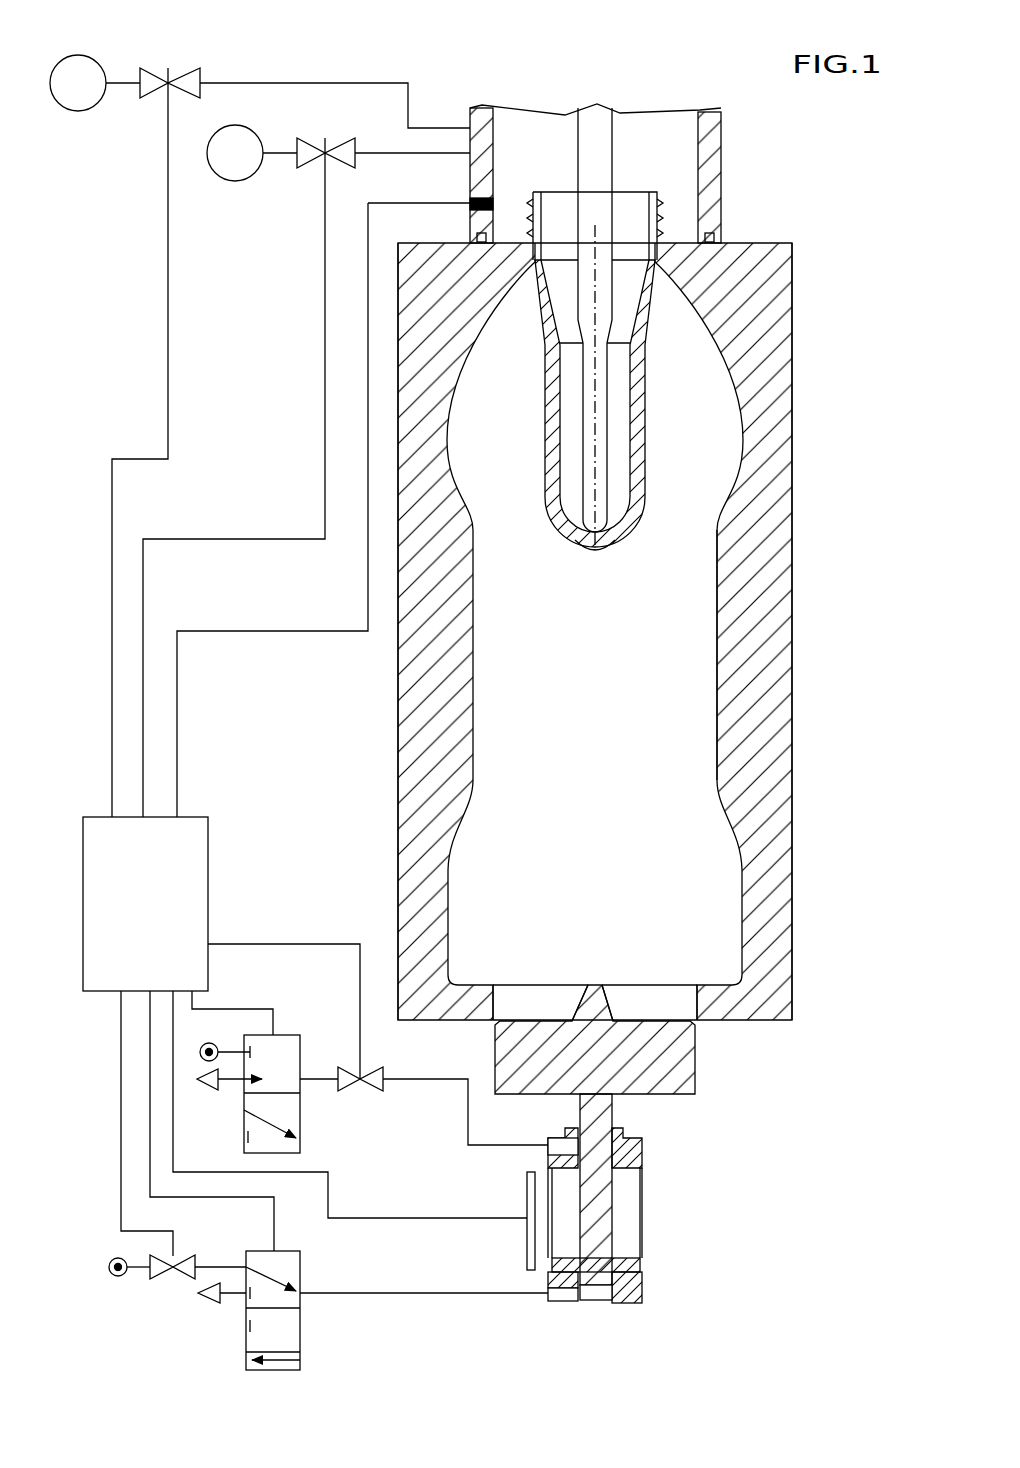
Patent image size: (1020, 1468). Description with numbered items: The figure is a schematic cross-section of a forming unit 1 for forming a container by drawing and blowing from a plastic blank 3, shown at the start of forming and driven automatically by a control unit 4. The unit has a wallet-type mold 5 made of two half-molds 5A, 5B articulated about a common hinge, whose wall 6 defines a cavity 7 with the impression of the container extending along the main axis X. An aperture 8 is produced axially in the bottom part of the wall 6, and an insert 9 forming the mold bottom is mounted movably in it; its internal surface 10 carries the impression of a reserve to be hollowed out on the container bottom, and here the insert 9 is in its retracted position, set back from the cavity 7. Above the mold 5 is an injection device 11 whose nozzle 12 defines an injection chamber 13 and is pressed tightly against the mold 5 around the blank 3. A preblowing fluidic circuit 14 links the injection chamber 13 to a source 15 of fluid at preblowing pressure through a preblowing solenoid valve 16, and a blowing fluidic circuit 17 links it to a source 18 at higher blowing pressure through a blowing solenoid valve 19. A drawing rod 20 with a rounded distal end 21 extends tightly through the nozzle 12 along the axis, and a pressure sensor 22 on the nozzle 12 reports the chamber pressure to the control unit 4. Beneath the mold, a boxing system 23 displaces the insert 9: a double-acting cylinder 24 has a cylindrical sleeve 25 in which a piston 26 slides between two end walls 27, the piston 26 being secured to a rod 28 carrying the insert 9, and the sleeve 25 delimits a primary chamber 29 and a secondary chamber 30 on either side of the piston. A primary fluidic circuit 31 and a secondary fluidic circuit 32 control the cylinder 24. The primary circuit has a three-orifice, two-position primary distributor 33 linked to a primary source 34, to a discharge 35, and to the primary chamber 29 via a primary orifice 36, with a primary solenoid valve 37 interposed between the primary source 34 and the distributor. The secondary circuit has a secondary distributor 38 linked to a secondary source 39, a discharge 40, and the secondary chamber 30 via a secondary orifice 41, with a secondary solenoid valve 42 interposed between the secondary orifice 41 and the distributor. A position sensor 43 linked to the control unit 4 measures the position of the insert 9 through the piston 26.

The forming unit 1 is at (812, 172).
The blank 3 is at (648, 423).
The control unit 4 is at (137, 912).
The mold 5 is at (792, 290).
The half-mold 5A is at (398, 768).
The half-mold 5B is at (792, 718).
The wall 6 is at (792, 555).
The cavity 7 is at (604, 644).
The aperture 8 is at (535, 1000).
The insert 9 is at (695, 1068).
The internal surface 10 is at (620, 1020).
The injection device 11 is at (260, 413).
The nozzle 12 is at (715, 128).
The injection chamber 13 is at (672, 162).
The preblowing fluidic circuit 14 is at (388, 82).
The source of fluid at preblowing pressure 15 is at (63, 96).
The preblowing solenoid valve 16 is at (157, 68).
The blowing fluidic circuit 17 is at (357, 152).
The source of fluid at blowing pressure 18 is at (220, 166).
The blowing solenoid valve 19 is at (306, 162).
The drawing rod 20 is at (580, 155).
The rounded distal end 21 is at (588, 537).
The pressure sensor 22 is at (470, 203).
The boxing system 23 is at (637, 1224).
The cylinder 24 is at (614, 1226).
The cylindrical sleeve 25 is at (645, 1243).
The piston 26 is at (640, 1267).
The end walls 27 is at (642, 1150).
The rod 28 is at (605, 1113).
The primary chamber 29 is at (597, 1302).
The secondary chamber 30 is at (628, 1200).
The primary fluidic circuit 31 is at (307, 1193).
The secondary fluidic circuit 32 is at (362, 1057).
The primary distributor 33 is at (300, 1368).
The primary source of fluid under pressure 34 is at (110, 1262).
The discharge 35 is at (208, 1303).
The primary orifice 36 is at (550, 1302).
The primary solenoid valve 37 is at (188, 1256).
The secondary distributor 38 is at (300, 1148).
The secondary source of fluid under pressure 39 is at (213, 1046).
The discharge 40 is at (200, 1090).
The secondary orifice 41 is at (552, 1143).
The secondary solenoid valve 42 is at (385, 1090).
The position sensor 43 is at (527, 1260).